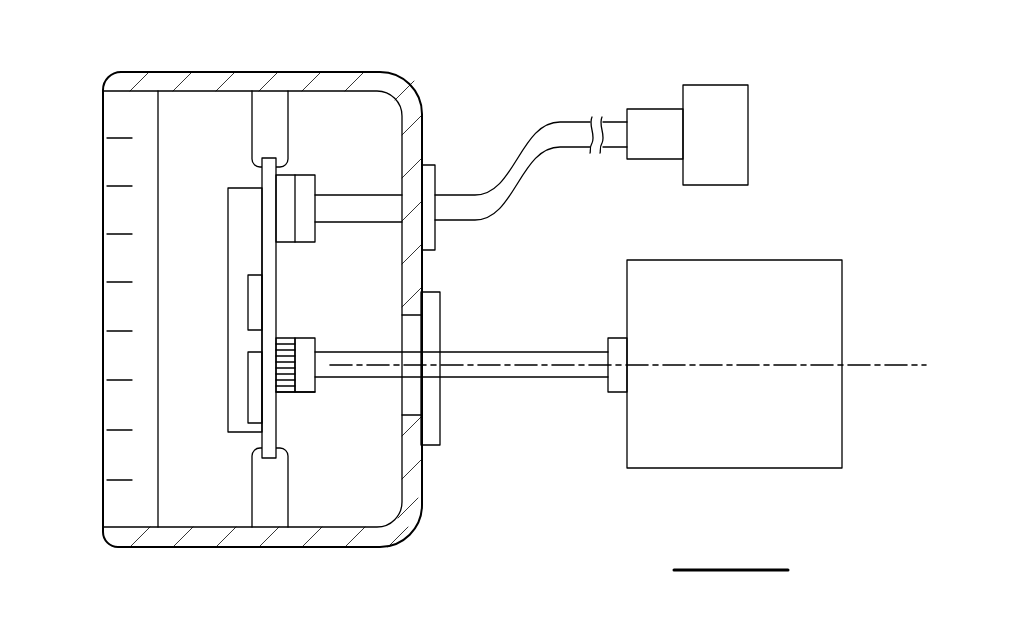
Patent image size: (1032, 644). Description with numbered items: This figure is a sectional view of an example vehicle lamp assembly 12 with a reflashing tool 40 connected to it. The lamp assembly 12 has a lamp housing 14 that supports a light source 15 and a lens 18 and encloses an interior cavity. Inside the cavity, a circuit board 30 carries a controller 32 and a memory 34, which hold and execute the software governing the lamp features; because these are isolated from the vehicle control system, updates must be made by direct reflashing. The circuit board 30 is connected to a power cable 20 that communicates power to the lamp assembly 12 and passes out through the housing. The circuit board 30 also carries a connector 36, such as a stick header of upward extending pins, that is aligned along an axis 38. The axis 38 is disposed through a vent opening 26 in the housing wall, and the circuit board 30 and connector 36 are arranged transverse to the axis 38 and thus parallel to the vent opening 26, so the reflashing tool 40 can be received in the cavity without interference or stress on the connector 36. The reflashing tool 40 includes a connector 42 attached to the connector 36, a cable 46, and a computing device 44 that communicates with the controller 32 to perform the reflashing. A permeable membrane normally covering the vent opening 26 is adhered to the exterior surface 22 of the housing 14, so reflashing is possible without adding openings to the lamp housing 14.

The lamp assembly 12 is at (451, 57).
The lamp housing 14 is at (284, 340).
The light source 15 is at (228, 228).
The lens 18 is at (122, 452).
The power cable 20 is at (612, 133).
The exterior surface 22 is at (432, 491).
The vent opening 26 is at (450, 324).
The circuit board 30 is at (268, 340).
The controller 32 is at (248, 387).
The memory 34 is at (248, 300).
The connector 36 is at (282, 393).
The axis 38 is at (860, 365).
The reflashing tool 40 is at (626, 373).
The connector 42 is at (305, 338).
The computing device 44 is at (742, 321).
The cable 46 is at (478, 368).